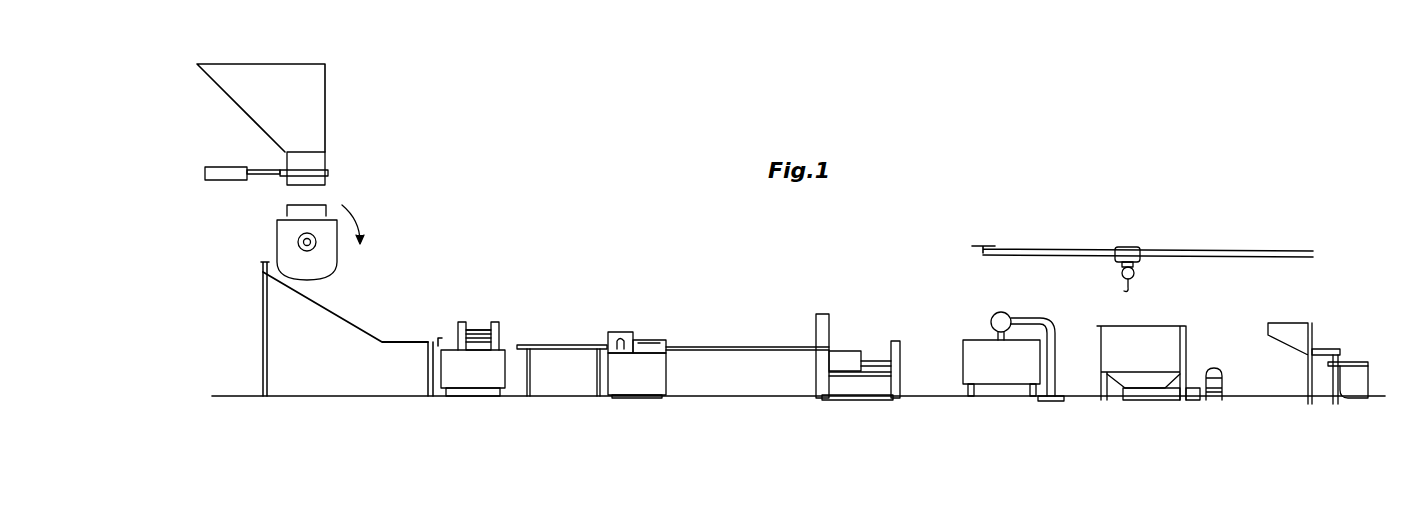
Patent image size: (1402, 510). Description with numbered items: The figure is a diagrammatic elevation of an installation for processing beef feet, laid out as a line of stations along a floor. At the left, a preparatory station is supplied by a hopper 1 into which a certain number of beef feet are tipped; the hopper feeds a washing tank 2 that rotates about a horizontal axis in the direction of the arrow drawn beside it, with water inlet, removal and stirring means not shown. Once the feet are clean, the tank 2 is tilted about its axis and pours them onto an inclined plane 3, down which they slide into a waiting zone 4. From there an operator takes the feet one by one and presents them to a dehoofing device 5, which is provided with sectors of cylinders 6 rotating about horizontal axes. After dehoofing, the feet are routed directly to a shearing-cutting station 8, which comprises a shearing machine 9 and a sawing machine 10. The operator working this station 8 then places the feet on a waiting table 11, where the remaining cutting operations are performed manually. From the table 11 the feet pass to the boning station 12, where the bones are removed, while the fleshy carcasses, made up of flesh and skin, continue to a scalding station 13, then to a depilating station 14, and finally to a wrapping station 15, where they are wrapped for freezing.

The hopper 1 is at (321, 118).
The washing tank 2 is at (282, 242).
The inclined plane 3 is at (347, 318).
The waiting zone 4 is at (410, 343).
The dehoofing device 5 is at (473, 385).
The sectors of cylinders 6 is at (480, 326).
The shearing-cutting station 8 is at (644, 384).
The shearing machine 9 is at (622, 332).
The sawing machine 10 is at (655, 338).
The waiting table 11 is at (748, 345).
The boning station 12 is at (869, 385).
The scalding station 13 is at (1017, 377).
The depilating station 14 is at (1172, 347).
The wrapping station 15 is at (1295, 341).